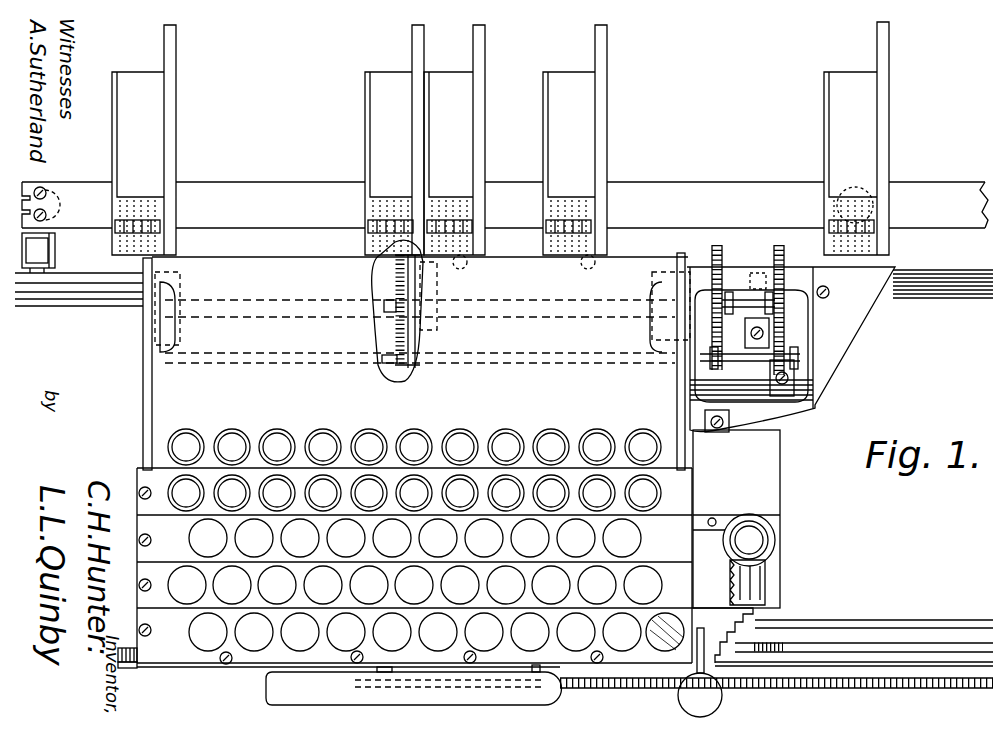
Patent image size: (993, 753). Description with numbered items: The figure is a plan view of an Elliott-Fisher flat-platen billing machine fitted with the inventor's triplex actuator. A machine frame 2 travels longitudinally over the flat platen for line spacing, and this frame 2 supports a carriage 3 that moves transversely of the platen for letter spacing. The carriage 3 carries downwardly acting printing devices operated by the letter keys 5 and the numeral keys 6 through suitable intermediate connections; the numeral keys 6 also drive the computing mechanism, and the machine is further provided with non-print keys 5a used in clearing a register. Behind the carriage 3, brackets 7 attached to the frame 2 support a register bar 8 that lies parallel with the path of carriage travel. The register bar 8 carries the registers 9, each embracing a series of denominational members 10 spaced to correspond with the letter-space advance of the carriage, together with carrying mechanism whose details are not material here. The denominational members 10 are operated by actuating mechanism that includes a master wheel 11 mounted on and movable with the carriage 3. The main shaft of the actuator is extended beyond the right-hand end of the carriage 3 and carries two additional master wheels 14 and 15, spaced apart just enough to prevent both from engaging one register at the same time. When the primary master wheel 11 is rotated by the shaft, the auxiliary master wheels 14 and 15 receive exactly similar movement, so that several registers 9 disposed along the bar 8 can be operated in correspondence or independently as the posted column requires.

The machine frame 2 is at (870, 655).
The carriage 3 is at (165, 405).
The letter key 5 is at (538, 585).
The type key 5a is at (548, 432).
The numeral key 6 is at (165, 487).
The bracket 7 is at (55, 250).
The register bar 8 is at (937, 186).
The register 9 is at (158, 106).
The denominational member 10 is at (120, 230).
The master wheel 11 is at (395, 334).
The auxiliary master wheel 14 is at (720, 252).
The auxiliary master wheel 15 is at (824, 263).